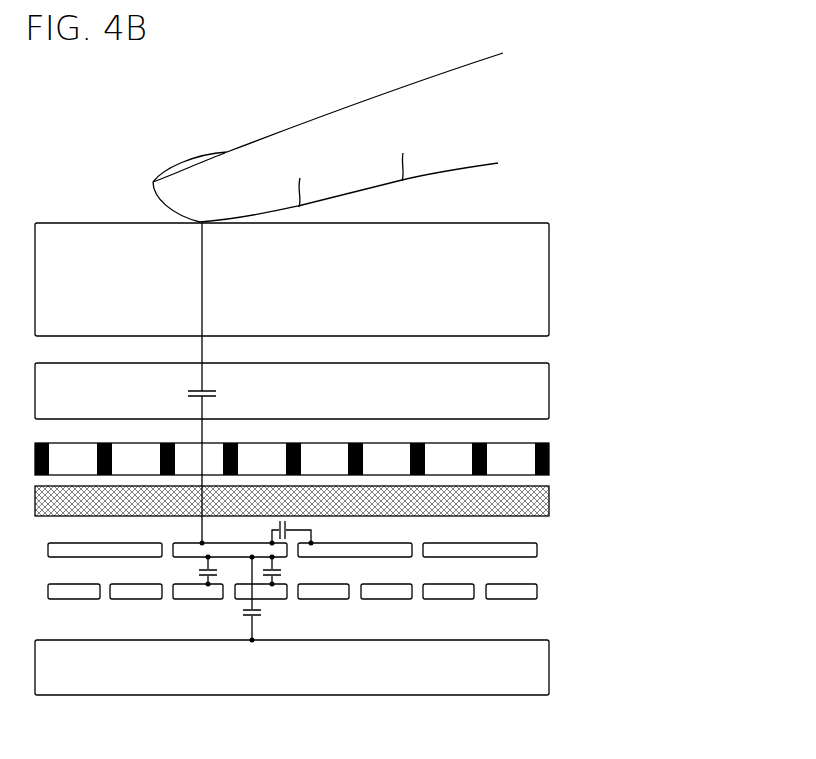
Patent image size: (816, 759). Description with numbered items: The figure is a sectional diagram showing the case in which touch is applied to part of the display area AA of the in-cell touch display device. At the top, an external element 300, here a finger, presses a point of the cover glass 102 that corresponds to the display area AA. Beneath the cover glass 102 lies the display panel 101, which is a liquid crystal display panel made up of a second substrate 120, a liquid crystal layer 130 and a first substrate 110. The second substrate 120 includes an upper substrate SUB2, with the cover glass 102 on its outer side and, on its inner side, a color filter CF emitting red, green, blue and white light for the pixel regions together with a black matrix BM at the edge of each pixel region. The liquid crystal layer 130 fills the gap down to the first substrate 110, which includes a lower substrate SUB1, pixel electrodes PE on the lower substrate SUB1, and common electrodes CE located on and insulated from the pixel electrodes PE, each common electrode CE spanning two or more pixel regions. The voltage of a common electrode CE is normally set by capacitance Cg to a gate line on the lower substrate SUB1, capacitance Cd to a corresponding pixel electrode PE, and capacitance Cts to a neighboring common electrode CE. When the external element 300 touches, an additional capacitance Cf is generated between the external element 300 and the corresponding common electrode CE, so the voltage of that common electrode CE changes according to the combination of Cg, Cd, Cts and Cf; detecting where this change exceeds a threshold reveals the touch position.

The external element 300 is at (234, 142).
The display area AA is at (57, 192).
The cover glass 102 is at (550, 280).
The upper substrate SUB2 is at (550, 390).
The capacitance Cf is at (188, 389).
The black matrix BM is at (293, 443).
The color filter CF is at (386, 443).
The liquid crystal layer 130 is at (550, 497).
The common electrode CE is at (538, 549).
The pixel electrode PE is at (538, 591).
The capacitance Cd is at (239, 570).
The capacitance Cg is at (240, 598).
The capacitance Cts is at (276, 532).
The lower substrate SUB1 is at (550, 666).
The second substrate 120 is at (662, 383).
The display panel 101 is at (725, 421).
The first substrate 110 is at (654, 542).